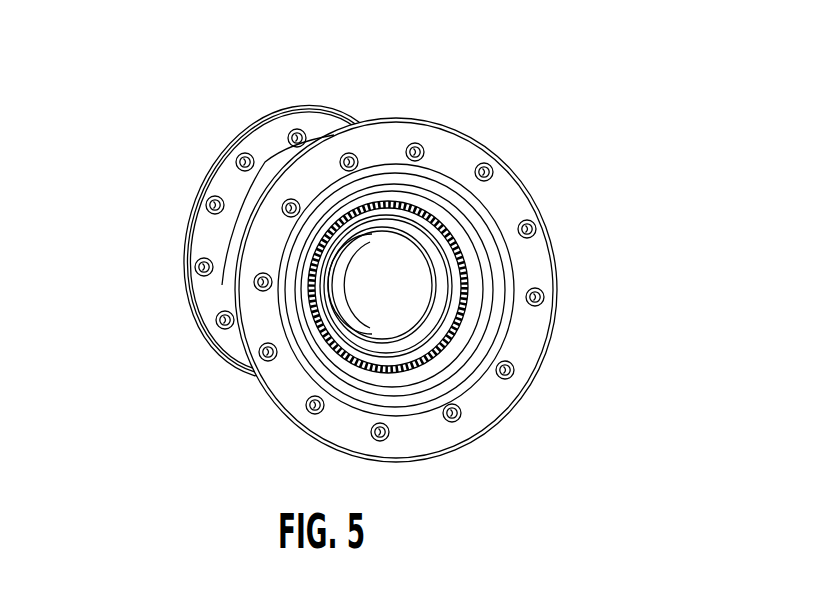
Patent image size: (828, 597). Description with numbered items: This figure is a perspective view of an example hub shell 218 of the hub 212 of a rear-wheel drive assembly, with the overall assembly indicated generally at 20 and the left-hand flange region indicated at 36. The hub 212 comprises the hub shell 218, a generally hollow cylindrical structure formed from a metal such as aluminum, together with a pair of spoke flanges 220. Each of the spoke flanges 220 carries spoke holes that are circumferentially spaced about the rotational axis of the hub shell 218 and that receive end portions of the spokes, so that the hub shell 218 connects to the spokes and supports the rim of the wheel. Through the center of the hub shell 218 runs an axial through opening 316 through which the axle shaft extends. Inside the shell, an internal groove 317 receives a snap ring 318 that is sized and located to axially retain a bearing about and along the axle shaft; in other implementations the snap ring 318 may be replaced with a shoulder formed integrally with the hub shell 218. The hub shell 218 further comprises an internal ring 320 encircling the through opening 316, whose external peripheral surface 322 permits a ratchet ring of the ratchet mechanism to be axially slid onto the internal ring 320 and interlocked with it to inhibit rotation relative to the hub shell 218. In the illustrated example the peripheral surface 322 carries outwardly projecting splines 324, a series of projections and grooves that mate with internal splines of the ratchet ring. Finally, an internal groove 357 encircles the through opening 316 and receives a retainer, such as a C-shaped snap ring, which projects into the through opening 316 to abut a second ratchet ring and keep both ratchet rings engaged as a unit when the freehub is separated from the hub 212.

The hub assembly 20 is at (121, 97).
The rear flange 36 is at (213, 107).
The hub 212 is at (435, 62).
The hub shell 218 is at (339, 109).
The spoke flanges 220 is at (201, 166).
The axial through opening 316 is at (447, 186).
The internal groove 317 is at (372, 337).
The snap ring 318 is at (400, 332).
The internal ring 320 is at (329, 323).
The external peripheral surface 322 is at (311, 303).
The splines 324 is at (464, 256).
The internal groove 357 is at (494, 323).